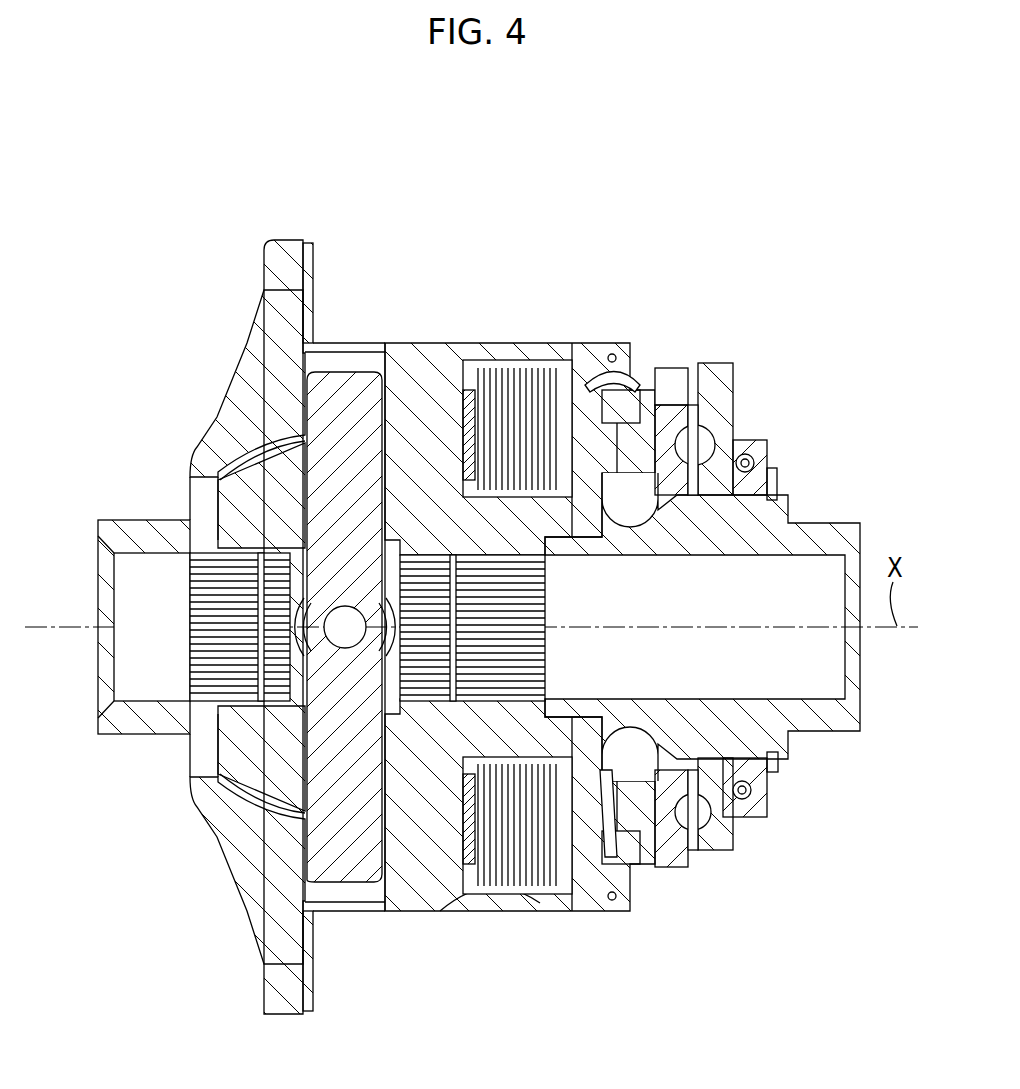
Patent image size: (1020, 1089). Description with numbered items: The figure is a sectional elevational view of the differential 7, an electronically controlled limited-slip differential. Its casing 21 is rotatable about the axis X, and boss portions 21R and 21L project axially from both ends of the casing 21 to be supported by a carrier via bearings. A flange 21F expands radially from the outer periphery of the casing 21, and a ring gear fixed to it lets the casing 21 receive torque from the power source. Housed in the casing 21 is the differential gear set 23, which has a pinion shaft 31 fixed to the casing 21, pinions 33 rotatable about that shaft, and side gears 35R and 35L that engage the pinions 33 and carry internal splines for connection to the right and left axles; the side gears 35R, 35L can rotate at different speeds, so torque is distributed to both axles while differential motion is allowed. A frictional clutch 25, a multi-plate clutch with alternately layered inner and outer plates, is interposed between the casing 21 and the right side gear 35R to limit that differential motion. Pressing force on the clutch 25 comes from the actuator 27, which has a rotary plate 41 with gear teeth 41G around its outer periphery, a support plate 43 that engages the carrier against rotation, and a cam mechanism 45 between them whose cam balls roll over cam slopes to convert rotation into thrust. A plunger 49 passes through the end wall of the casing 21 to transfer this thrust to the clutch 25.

The differential 7 is at (610, 157).
The casing 21 is at (425, 342).
The flange 21F is at (275, 262).
The boss portion 21L is at (120, 540).
The boss portion 21R is at (835, 540).
The differential gear set 23 is at (430, 930).
The frictional clutch 25 is at (512, 360).
The actuator 27 is at (690, 322).
The pinion shaft 31 is at (347, 370).
The pinion 33 is at (275, 775).
The left side gear 35L is at (185, 642).
The right side gear 35R is at (512, 652).
The rotary plate 41 is at (735, 836).
The gear teeth 41G is at (705, 365).
The support plate 43 is at (708, 420).
The cam mechanism 45 is at (694, 848).
The plunger 49 is at (590, 380).